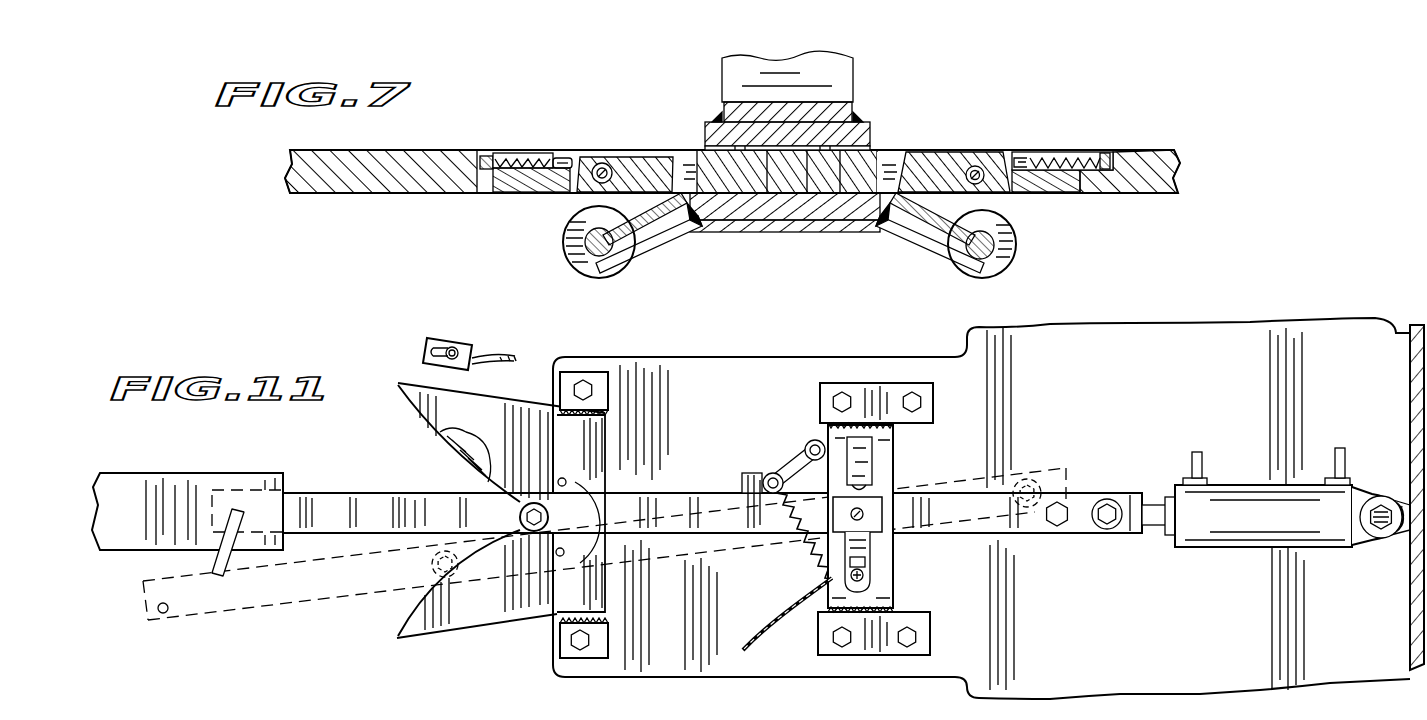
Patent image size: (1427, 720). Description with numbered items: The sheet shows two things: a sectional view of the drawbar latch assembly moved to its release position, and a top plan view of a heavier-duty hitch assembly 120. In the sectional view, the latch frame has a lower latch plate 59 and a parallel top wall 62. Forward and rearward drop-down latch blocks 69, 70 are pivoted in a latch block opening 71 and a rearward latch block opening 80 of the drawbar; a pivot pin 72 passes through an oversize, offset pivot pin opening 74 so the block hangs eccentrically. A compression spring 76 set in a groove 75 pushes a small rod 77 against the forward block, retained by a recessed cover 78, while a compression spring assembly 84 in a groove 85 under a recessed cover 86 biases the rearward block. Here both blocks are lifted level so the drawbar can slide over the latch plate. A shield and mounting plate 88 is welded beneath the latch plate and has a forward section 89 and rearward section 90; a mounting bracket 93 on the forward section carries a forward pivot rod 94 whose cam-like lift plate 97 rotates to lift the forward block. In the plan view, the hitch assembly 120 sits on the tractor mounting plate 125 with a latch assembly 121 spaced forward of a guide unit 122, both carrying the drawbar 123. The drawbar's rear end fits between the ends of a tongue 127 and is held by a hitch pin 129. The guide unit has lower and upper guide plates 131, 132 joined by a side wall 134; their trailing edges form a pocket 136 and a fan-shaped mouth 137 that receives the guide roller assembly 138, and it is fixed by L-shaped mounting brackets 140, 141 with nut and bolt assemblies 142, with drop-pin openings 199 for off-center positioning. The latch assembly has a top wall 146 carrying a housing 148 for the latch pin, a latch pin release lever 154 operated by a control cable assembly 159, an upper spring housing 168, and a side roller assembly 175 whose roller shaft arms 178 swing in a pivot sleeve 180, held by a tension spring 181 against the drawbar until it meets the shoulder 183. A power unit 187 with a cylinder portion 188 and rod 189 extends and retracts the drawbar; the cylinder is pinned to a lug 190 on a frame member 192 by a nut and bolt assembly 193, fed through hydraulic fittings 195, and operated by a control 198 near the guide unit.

In FIG. 7, the latch plate 59 is at (780, 206).
In FIG. 7, the top member or wall 62 is at (852, 118).
In FIG. 7, the forward latch block 69 is at (928, 162).
In FIG. 7, the rearward latch block 70 is at (632, 157).
In FIG. 7, the latch block opening 71 is at (890, 165).
In FIG. 7, the latch block pivot pin 72 is at (968, 165).
In FIG. 7, the pivot pin opening 74 is at (979, 167).
In FIG. 7, the groove 75 is at (1090, 196).
In FIG. 7, the compression spring 76 is at (1060, 163).
In FIG. 7, the small rod 77 is at (1022, 160).
In FIG. 7, the recessed cover 78 is at (1082, 158).
In FIG. 7, the rearward latch block opening 80 is at (685, 156).
In FIG. 7, the compression spring assembly 84 is at (548, 158).
In FIG. 7, the groove 85 is at (493, 171).
In FIG. 7, the recessed cover 86 is at (522, 152).
In FIG. 7, the shield and mounting plate 88 is at (838, 236).
In FIG. 7, the forward section 89 is at (933, 256).
In FIG. 7, the rearward section 90 is at (658, 248).
In FIG. 7, the mounting bracket 93 is at (1017, 234).
In FIG. 7, the forward pivot rod 94 is at (1000, 251).
In FIG. 7, the lift plate 97 is at (945, 202).
In FIG. 11, the hitch assembly 120 is at (1018, 410).
In FIG. 11, the latch assembly 121 is at (936, 632).
In FIG. 11, the guide unit 122 is at (471, 542).
In FIG. 11, the drawbar 123 is at (236, 600).
In FIG. 11, the mounting plate 125 is at (1253, 340).
In FIG. 11, the tongue 127 is at (170, 475).
In FIG. 11, the hitch pin 129 is at (218, 562).
In FIG. 11, the lower guide plate 131 is at (456, 452).
In FIG. 11, the upper guide plate 132 is at (415, 417).
In FIG. 11, the side wall 134 is at (518, 407).
In FIG. 11, the pocket 136 is at (580, 560).
In FIG. 11, the fan-shaped mouth 137 is at (408, 604).
In FIG. 11, the guide roller assembly 138 is at (390, 575).
In FIG. 11, the L-shaped mounting bracket 140 is at (608, 640).
In FIG. 11, the L-shaped mounting bracket 141 is at (606, 390).
In FIG. 11, the nut and bolt assemblies 142 is at (585, 380).
In FIG. 11, the top wall 146 is at (885, 495).
In FIG. 11, the housing 148 is at (885, 520).
In FIG. 11, the latch pin release lever 154 is at (880, 575).
In FIG. 11, the control cable assembly 159 is at (780, 656).
In FIG. 11, the upper spring housing 168 is at (865, 457).
In FIG. 11, the side roller assembly 175 is at (757, 430).
In FIG. 11, the roller shaft arms 178 is at (792, 468).
In FIG. 11, the pivot sleeve 180 is at (815, 440).
In FIG. 11, the tension spring 181 is at (822, 560).
In FIG. 11, the shoulder 183 is at (742, 482).
In FIG. 11, the power unit 187 is at (1274, 488).
In FIG. 11, the cylinder portion 188 is at (1258, 530).
In FIG. 11, the rod 189 is at (1152, 500).
In FIG. 11, the lug 190 is at (1400, 540).
In FIG. 11, the frame member 192 is at (1396, 328).
In FIG. 11, the nut and bolt assembly 193 is at (1382, 500).
In FIG. 11, the hydraulic fittings 195 is at (1205, 466).
In FIG. 11, the control 198 is at (462, 338).
In FIG. 11, the drop-pin openings 199 is at (566, 478).